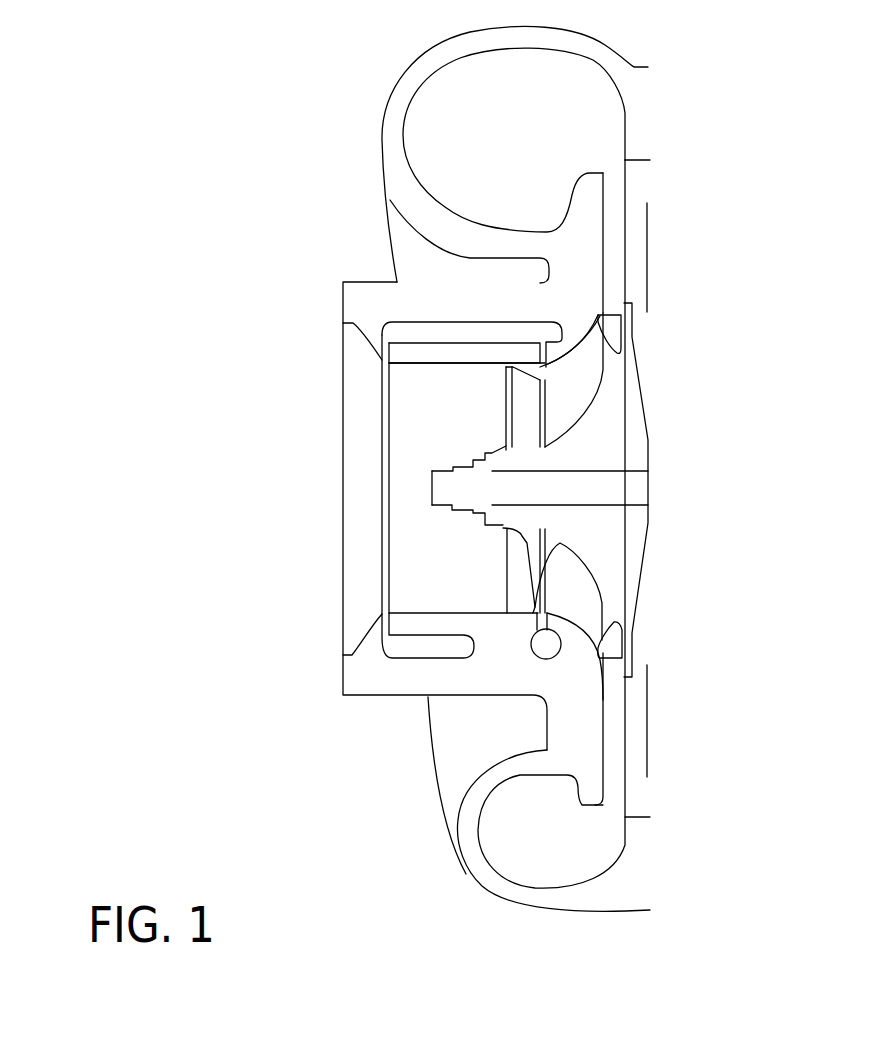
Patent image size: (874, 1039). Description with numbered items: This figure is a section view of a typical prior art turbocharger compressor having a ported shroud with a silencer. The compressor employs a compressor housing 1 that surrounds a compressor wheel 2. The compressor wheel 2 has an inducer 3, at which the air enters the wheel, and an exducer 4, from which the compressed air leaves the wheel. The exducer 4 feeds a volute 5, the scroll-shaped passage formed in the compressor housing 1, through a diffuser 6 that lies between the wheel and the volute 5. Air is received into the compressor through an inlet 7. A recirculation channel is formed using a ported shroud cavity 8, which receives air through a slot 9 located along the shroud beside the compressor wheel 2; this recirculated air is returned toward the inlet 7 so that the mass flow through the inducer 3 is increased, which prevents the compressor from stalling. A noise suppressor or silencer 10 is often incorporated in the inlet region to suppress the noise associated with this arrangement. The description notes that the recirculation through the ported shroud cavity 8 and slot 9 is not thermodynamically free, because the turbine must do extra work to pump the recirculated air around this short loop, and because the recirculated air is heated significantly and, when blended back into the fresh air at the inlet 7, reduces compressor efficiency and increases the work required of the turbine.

The compressor housing 1 is at (382, 129).
The compressor wheel 2 is at (588, 440).
The inducer 3 is at (503, 602).
The exducer 4 is at (610, 665).
The volute 5 is at (509, 130).
The diffuser 6 is at (617, 233).
The inlet 7 is at (363, 483).
The ported shroud cavity 8 is at (440, 333).
The slot 9 is at (545, 366).
The noise suppressor or silencer 10 is at (382, 380).